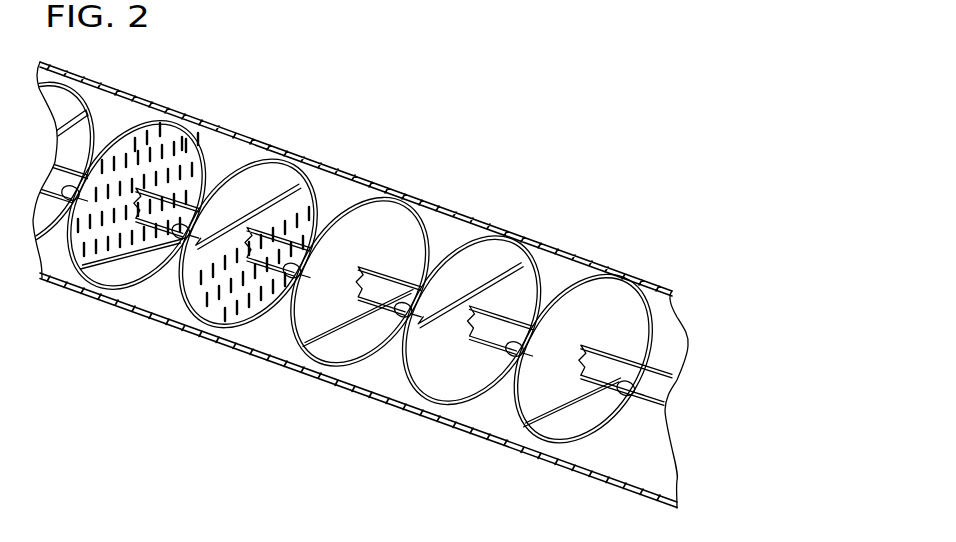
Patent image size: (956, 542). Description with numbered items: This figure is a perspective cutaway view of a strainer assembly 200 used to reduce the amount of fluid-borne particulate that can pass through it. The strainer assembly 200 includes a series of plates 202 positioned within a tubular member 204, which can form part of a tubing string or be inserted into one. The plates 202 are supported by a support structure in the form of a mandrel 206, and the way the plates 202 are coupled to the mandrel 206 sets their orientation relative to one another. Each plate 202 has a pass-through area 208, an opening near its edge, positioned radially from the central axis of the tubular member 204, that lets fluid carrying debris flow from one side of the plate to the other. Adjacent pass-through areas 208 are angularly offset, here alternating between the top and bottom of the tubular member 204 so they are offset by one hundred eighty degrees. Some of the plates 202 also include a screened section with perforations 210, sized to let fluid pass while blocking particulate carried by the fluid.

The strainer assembly 200 is at (489, 149).
The plates 202 is at (318, 203).
The tubular member 204 is at (440, 420).
The mandrel 206 is at (665, 382).
The pass-through area 208 is at (300, 174).
The perforations 210 is at (160, 134).